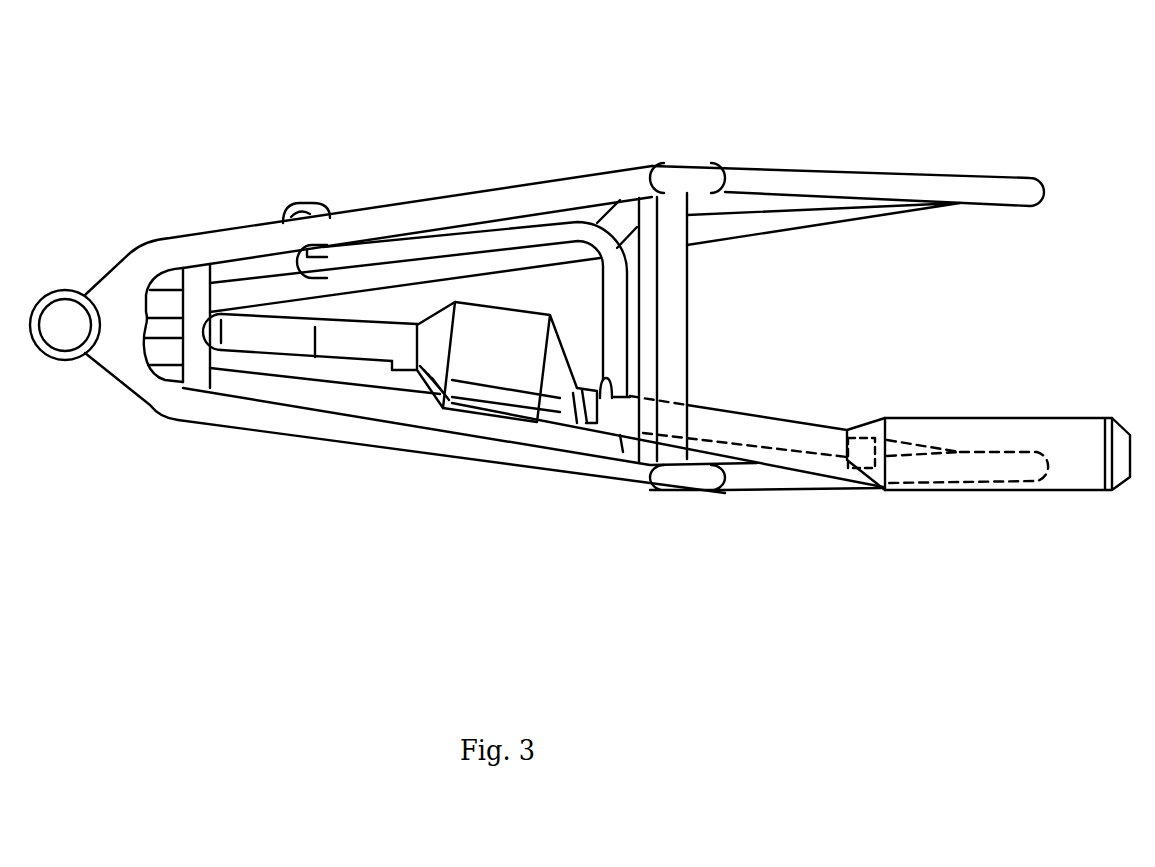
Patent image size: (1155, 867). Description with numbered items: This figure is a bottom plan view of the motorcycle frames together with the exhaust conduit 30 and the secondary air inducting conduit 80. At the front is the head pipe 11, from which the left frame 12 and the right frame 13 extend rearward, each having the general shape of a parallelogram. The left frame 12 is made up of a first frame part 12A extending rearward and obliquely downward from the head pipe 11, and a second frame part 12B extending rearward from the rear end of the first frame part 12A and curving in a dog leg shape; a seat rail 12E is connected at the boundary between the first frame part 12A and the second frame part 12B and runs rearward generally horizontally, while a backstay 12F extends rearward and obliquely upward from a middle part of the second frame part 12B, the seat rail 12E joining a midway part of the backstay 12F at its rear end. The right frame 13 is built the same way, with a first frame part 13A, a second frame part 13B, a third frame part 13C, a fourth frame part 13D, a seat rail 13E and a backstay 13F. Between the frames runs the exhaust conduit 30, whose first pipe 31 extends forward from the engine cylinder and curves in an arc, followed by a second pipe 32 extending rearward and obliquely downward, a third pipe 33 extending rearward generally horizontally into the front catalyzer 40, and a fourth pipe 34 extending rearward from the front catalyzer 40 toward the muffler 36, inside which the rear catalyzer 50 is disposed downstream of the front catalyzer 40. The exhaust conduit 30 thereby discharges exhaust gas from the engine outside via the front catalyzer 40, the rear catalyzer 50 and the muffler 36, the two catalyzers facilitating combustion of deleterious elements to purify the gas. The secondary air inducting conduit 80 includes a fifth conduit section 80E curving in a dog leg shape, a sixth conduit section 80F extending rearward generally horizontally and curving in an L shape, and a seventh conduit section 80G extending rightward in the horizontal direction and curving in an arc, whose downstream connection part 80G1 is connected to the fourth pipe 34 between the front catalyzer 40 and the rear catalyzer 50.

The head pipe 11 is at (65, 290).
The left frame 12 is at (484, 476).
The first frame part 12A is at (395, 405).
The second frame part 12B is at (680, 482).
The seat rail 12E is at (917, 440).
The backstay 12F is at (785, 482).
The right frame 13 is at (564, 251).
The first frame part 13A is at (360, 280).
The second frame part 13B is at (685, 172).
The third frame part 13C is at (487, 200).
The fourth frame part 13D is at (190, 230).
The seat rail 13E is at (825, 213).
The backstay 13F is at (905, 185).
The exhaust conduit 30 is at (299, 432).
The first pipe 31 is at (212, 330).
The second pipe 32 is at (287, 340).
The third pipe 33 is at (358, 345).
The fourth pipe 34 is at (628, 428).
The muffler 36 is at (1082, 472).
The front catalyzer 40 is at (481, 367).
The rear catalyzer 50 is at (857, 472).
The secondary air inducting conduit 80 is at (443, 312).
The fifth conduit section 80E is at (300, 205).
The sixth conduit section 80F is at (515, 230).
The seventh conduit section 80G is at (613, 333).
The downstream connection part 80G1 is at (610, 400).